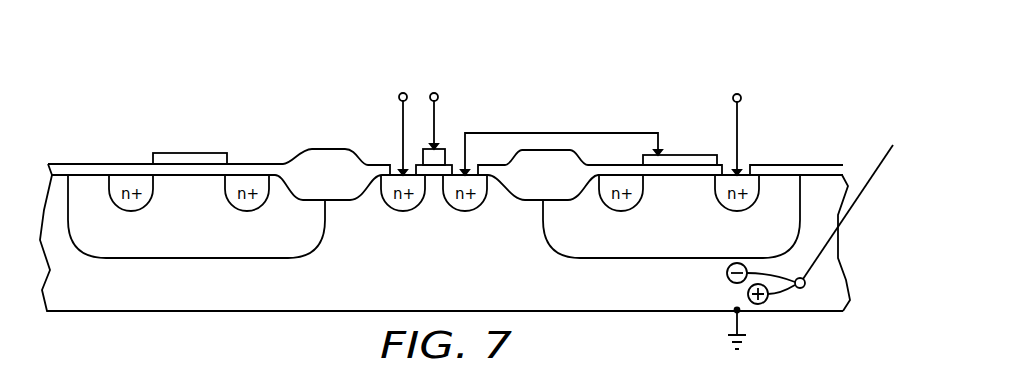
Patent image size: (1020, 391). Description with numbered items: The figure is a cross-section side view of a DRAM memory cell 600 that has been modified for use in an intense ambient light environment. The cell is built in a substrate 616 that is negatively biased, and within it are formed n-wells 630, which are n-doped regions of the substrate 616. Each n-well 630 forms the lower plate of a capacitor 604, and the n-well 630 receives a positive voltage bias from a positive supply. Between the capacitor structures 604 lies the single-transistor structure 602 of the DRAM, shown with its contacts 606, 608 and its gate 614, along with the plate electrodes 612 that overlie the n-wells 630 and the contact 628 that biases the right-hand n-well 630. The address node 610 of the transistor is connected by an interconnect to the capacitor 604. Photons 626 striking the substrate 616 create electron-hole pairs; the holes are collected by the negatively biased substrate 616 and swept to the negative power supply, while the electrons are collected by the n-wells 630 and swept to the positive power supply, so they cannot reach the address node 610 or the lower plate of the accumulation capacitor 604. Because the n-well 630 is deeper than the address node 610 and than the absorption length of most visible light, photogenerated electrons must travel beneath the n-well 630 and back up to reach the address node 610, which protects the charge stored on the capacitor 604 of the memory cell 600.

The memory cell 600 is at (319, 70).
The transistor 602 is at (491, 85).
The capacitor 604 is at (278, 85).
The source contact 606 is at (398, 97).
The gate contact 608 is at (440, 97).
The address node 610 is at (553, 133).
The electrode plate 612 is at (190, 153).
The gate 614 is at (437, 165).
The substrate 616 is at (455, 295).
The photons 626 is at (880, 164).
The contact 628 is at (743, 100).
The n-well 630 is at (325, 230).